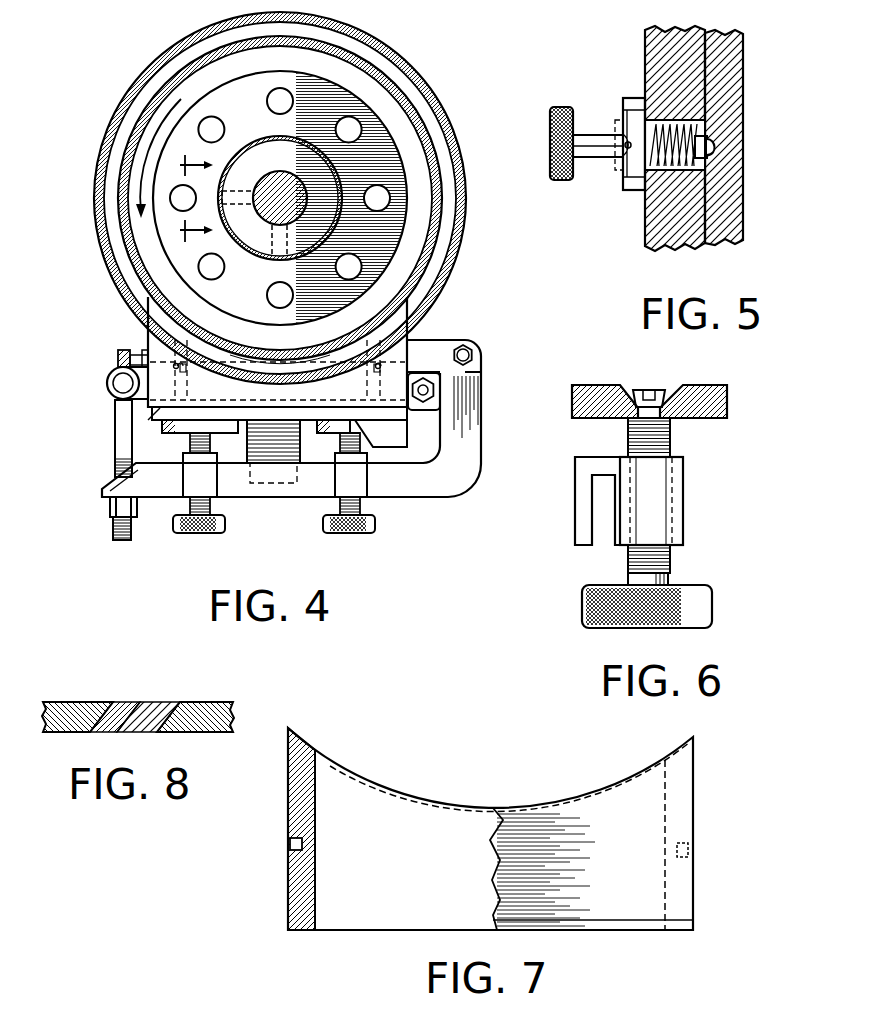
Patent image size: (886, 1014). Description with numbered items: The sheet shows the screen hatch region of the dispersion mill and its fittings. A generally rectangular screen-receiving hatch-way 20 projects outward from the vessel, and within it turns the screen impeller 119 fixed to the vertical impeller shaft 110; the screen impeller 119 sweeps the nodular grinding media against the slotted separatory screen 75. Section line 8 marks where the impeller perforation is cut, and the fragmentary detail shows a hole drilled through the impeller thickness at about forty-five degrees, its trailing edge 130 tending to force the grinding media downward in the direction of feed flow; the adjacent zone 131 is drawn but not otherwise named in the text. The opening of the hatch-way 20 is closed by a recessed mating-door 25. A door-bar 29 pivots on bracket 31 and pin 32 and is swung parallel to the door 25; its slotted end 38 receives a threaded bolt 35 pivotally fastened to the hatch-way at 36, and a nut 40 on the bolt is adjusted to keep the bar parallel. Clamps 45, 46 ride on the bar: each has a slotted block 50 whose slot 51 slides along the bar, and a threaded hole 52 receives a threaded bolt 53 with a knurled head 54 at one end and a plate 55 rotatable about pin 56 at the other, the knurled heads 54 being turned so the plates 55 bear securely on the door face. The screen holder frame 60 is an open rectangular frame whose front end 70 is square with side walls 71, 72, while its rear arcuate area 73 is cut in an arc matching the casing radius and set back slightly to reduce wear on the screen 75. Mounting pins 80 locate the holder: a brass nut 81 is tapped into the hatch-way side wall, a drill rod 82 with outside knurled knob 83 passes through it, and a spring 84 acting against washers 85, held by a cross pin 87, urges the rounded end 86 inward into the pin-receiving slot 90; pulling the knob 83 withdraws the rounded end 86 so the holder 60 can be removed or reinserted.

In FIG. 4, the section line 8— 8 is at (197, 201).
In FIG. 4, the hatch-way 20 is at (146, 340).
In FIG. 5, the hatch-way 20 is at (669, 243).
In FIG. 4, the mating-door 25 is at (142, 425).
In FIG. 4, the door-bar 29 is at (417, 498).
In FIG. 4, the bracket 31 is at (430, 340).
In FIG. 4, the pin 32 is at (470, 352).
In FIG. 4, the threaded bolt 35 is at (112, 445).
In FIG. 4, the pivot point of bolt 36 is at (120, 398).
In FIG. 4, the slotted end 38 is at (102, 505).
In FIG. 4, the nut 40 is at (140, 525).
In FIG. 4, the clamp 45 is at (222, 477).
In FIG. 4, the clamp 46 is at (374, 477).
In FIG. 6, the clamp 46 is at (575, 475).
In FIG. 6, the slotted block 50 is at (683, 476).
In FIG. 6, the slot 51 is at (598, 545).
In FIG. 6, the threaded hole 52 is at (672, 456).
In FIG. 6, the threaded bolt 53 is at (672, 558).
In FIG. 4, the knurled head 54 is at (205, 533).
In FIG. 6, the knurled head 54 is at (710, 589).
In FIG. 4, the plate 55 is at (222, 435).
In FIG. 6, the plate 55 is at (728, 413).
In FIG. 6, the pin 56 is at (656, 393).
In FIG. 4, the screen holder frame 60 is at (375, 336).
In FIG. 5, the screen holder frame 60 is at (743, 226).
In FIG. 7, the screen holder frame 60 is at (282, 744).
In FIG. 7, the front end 70 is at (352, 930).
In FIG. 7, the side wall 71 is at (287, 910).
In FIG. 7, the side wall 72 is at (694, 905).
In FIG. 7, the arcuate area 73 is at (385, 793).
In FIG. 4, the screen 75 is at (264, 349).
In FIG. 7, the screen 75 is at (430, 798).
In FIG. 4, the mounting pin 80 is at (115, 356).
In FIG. 5, the mounting pin 80 is at (585, 128).
In FIG. 4, the brass nut 81 is at (142, 352).
In FIG. 5, the brass nut 81 is at (627, 97).
In FIG. 5, the drill rod 82 is at (588, 160).
In FIG. 5, the knurled knob 83 is at (562, 183).
In FIG. 5, the spring 84 is at (697, 127).
In FIG. 5, the washers 85 is at (703, 131).
In FIG. 4, the rounded end 86 is at (174, 368).
In FIG. 5, the rounded end 86 is at (710, 141).
In FIG. 5, the pin 87 is at (614, 142).
In FIG. 4, the pin-receiving slot 90 is at (183, 383).
In FIG. 5, the pin-receiving slot 90 is at (719, 152).
In FIG. 7, the pin-receiving slot 90 is at (290, 852).
In FIG. 4, the vertical impeller shaft 110 is at (276, 174).
In FIG. 4, the screen impeller 119 is at (332, 82).
In FIG. 8, the screen impeller 119 is at (207, 702).
In FIG. 8, the trailing edge of perforation 130 is at (115, 702).
In FIG. 8, the weld zone 131 is at (180, 702).